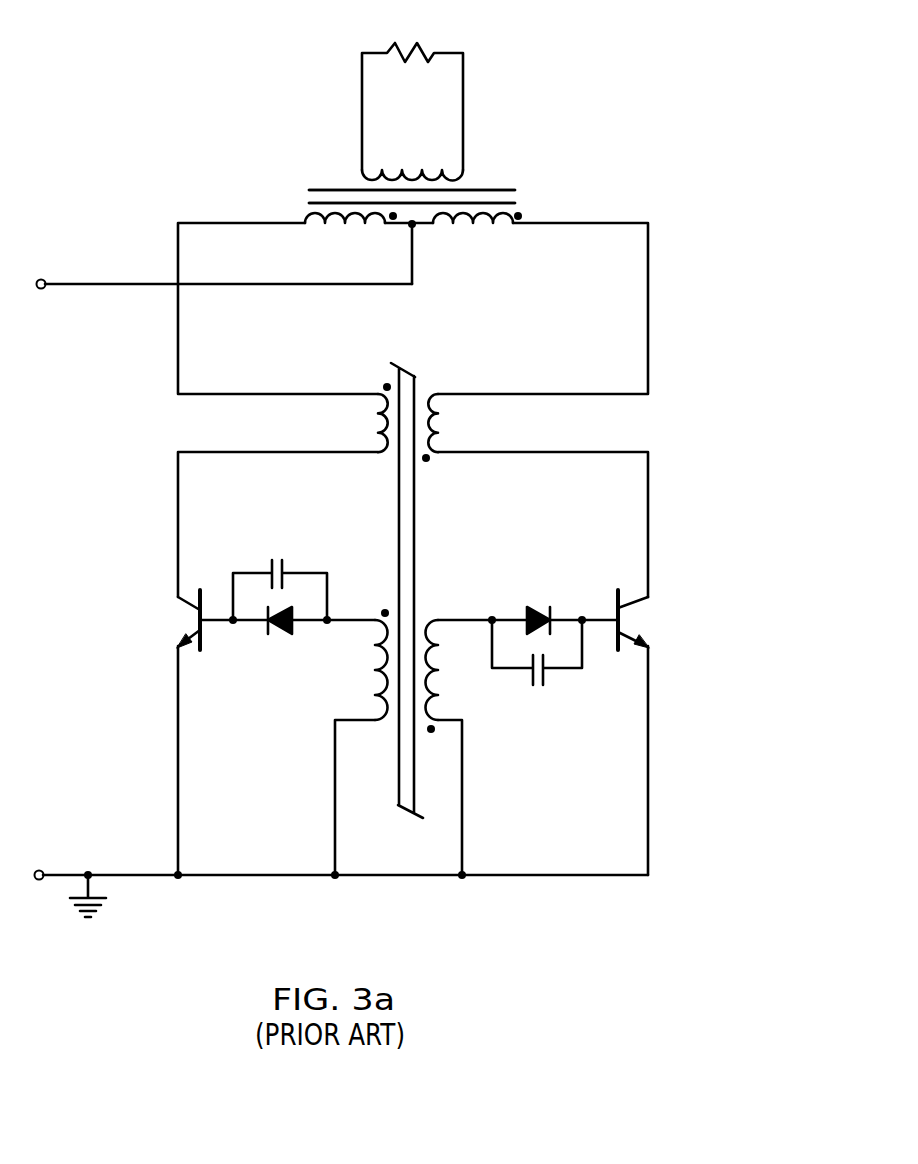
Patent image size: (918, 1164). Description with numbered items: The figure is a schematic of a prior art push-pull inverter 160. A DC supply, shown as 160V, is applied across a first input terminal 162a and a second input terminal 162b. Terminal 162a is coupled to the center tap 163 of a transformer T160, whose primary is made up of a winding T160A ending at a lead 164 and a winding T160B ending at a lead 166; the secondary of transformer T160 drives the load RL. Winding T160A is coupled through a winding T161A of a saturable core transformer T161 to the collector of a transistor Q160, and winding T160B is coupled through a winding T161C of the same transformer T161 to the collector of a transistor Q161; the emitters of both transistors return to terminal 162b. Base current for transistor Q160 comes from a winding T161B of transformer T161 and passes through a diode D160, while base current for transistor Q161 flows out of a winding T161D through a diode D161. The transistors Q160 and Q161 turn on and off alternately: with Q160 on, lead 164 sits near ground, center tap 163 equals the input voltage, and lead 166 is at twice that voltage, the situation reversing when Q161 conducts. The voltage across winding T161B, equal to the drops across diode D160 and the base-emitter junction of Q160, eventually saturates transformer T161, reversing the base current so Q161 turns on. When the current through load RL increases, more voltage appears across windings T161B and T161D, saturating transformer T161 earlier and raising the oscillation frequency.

The load RL is at (418, 41).
The push-pull inverter 160 is at (524, 132).
The transformer T160 is at (515, 190).
The winding T160A is at (345, 229).
The winding T160B is at (472, 228).
The lead of winding T160A 164 is at (243, 222).
The lead of winding T160B 166 is at (553, 226).
The center tap 163 is at (413, 229).
The first input terminal 162a is at (82, 283).
The supply voltage 160V is at (133, 269).
The winding T161A is at (372, 438).
The winding T161C is at (441, 441).
The saturable core transformer T161 is at (399, 529).
The transistor Q160 is at (183, 606).
The diode D160 is at (265, 634).
The winding T161B is at (370, 668).
The winding T161D is at (445, 686).
The diode D161 is at (540, 606).
The transistor Q161 is at (640, 604).
The second input terminal 162b is at (128, 876).